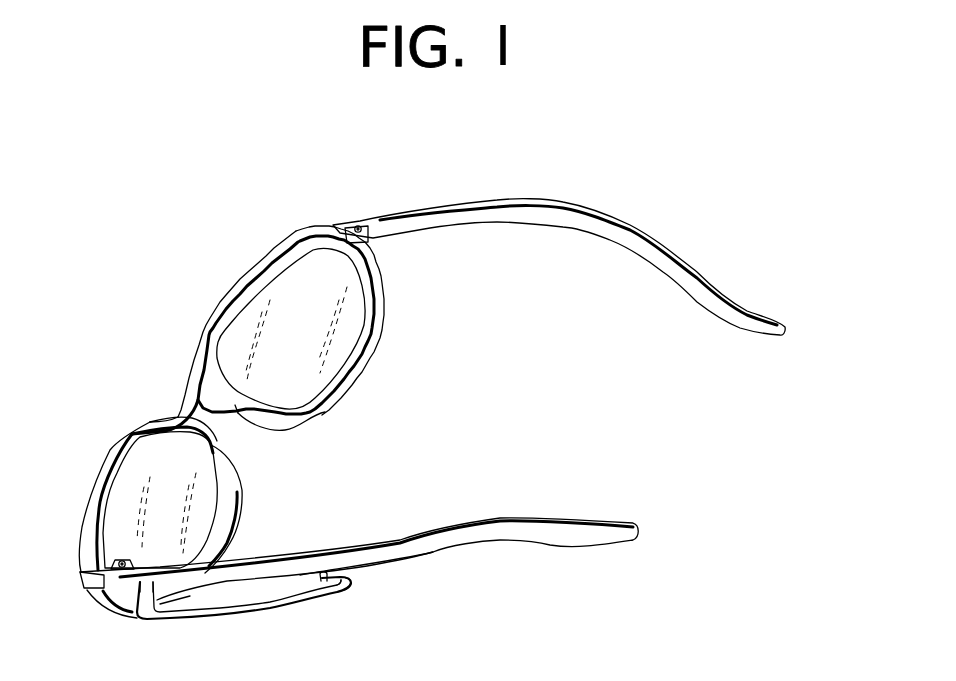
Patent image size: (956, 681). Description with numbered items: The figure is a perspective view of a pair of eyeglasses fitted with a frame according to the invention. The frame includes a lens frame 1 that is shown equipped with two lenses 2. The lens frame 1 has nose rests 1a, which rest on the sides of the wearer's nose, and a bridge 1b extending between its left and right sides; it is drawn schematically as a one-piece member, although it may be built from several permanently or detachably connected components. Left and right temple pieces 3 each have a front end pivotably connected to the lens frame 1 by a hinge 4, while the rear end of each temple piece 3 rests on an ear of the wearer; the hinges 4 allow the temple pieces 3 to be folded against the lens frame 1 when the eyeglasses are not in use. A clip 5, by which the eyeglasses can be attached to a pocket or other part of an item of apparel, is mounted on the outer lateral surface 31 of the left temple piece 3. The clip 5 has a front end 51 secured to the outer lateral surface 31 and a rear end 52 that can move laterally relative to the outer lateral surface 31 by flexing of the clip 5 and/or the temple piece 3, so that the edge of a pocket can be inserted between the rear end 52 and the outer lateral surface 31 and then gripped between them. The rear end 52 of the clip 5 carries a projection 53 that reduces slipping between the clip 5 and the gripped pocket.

The lens frame 1 is at (253, 263).
The nose rests 1a is at (293, 428).
The bridge 1b is at (182, 392).
The lenses 2 is at (252, 340).
The temple pieces 3 is at (505, 200).
The outer lateral surface 31 is at (415, 553).
The hinge 4 is at (357, 226).
The clip 5 is at (210, 619).
The front end 51 is at (148, 575).
The rear end 52 is at (352, 589).
The projection 53 is at (328, 570).